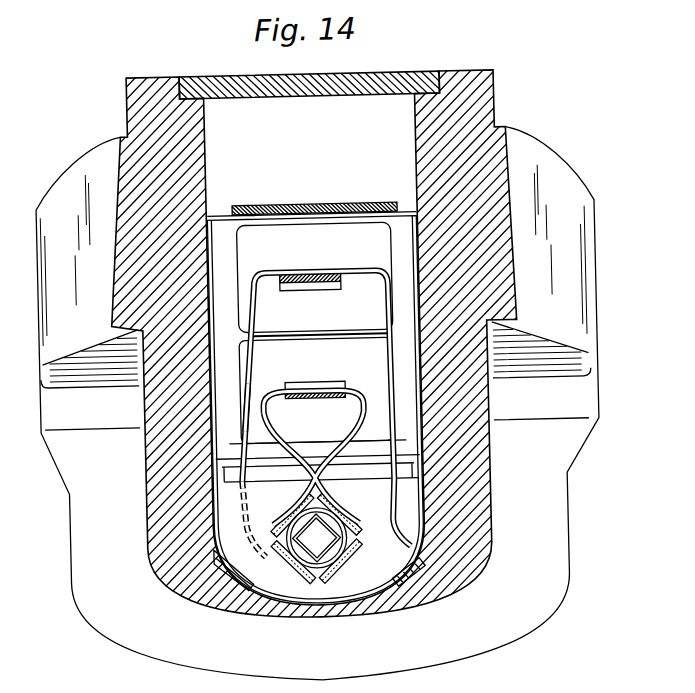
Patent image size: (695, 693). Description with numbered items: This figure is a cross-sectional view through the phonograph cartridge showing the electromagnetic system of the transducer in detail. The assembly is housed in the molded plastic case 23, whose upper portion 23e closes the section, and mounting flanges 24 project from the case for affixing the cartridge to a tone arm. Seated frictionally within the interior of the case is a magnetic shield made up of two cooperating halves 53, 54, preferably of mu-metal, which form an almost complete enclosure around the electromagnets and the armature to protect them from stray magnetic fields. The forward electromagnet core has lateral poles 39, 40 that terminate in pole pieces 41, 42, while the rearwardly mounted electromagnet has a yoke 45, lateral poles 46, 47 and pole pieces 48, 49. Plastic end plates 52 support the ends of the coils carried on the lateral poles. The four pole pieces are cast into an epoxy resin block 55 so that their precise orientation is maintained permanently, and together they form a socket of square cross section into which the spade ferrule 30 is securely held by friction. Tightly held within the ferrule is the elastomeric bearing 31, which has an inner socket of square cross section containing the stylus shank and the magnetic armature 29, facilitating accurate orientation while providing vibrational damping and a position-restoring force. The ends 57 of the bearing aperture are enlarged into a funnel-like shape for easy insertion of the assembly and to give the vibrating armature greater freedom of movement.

The molded plastic case 23 is at (560, 593).
The cover plate 23e is at (229, 74).
The mounting flanges 24 is at (73, 442).
The magnetic armature 29 is at (314, 547).
The spade ferrule 30 is at (416, 559).
The elastomeric bearing 31 is at (252, 601).
The lateral pole 39 is at (366, 276).
The lateral pole 40 is at (269, 425).
The pole piece 41 is at (360, 578).
The pole piece 42 is at (289, 503).
The yoke 45 is at (322, 290).
The lateral pole 46 is at (253, 382).
The lateral pole 47 is at (316, 406).
The pole piece 48 is at (284, 579).
The pole piece 49 is at (344, 509).
The plastic end plates 52 is at (315, 332).
The shield half-shell 53 is at (362, 213).
The shield half-shell 54 is at (269, 209).
The epoxy resin block 55 is at (350, 586).
The enlarged ends of bearing aperture 57 is at (308, 570).